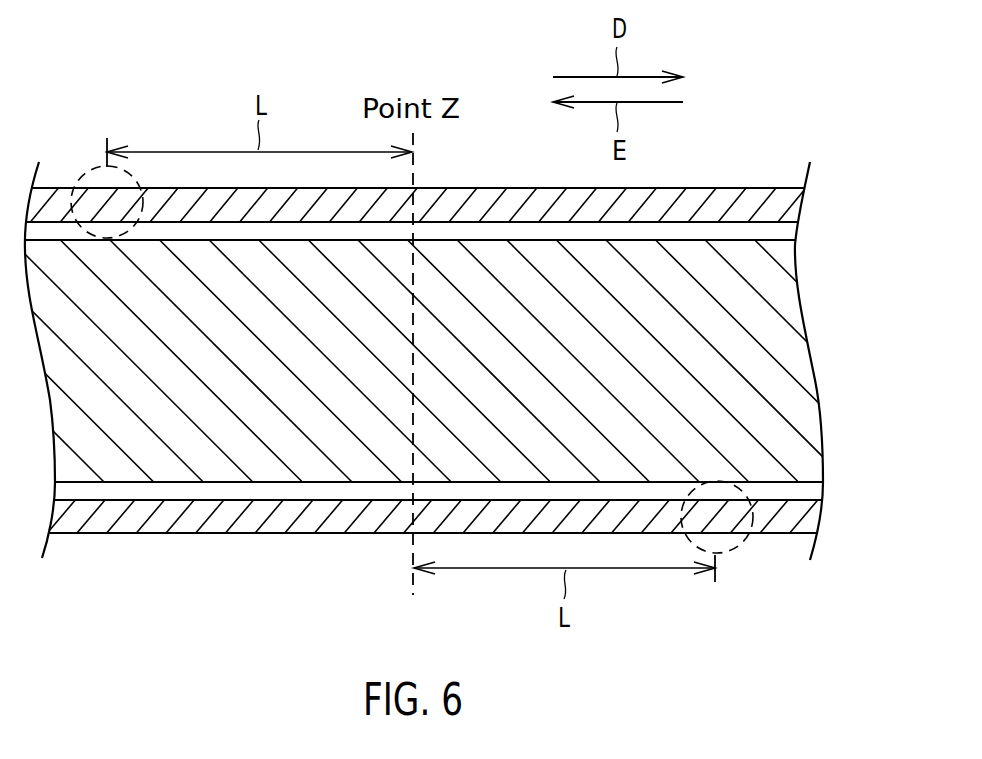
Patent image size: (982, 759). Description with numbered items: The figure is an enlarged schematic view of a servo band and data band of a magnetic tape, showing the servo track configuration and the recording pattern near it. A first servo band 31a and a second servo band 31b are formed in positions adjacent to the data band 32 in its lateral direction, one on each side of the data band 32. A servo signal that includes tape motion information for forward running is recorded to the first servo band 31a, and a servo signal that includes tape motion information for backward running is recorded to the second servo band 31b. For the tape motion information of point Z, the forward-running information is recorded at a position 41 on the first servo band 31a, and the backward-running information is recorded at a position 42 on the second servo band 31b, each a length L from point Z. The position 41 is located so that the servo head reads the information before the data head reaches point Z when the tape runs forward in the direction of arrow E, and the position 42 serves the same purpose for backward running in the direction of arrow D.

The first servo band 31a is at (785, 204).
The second servo band 31b is at (807, 517).
The data band 32 is at (785, 355).
The position 41 is at (83, 172).
The position 42 is at (734, 548).